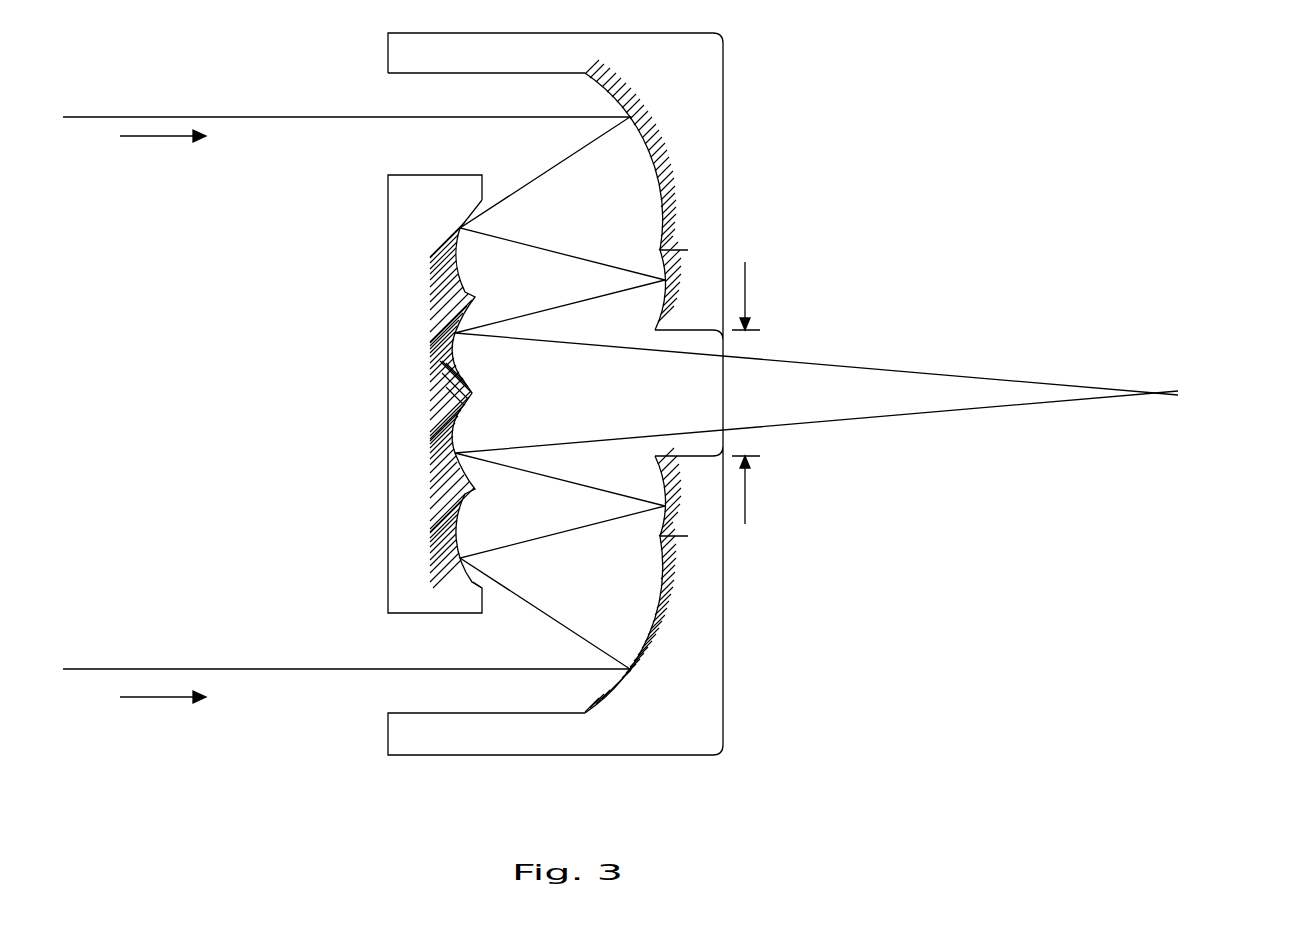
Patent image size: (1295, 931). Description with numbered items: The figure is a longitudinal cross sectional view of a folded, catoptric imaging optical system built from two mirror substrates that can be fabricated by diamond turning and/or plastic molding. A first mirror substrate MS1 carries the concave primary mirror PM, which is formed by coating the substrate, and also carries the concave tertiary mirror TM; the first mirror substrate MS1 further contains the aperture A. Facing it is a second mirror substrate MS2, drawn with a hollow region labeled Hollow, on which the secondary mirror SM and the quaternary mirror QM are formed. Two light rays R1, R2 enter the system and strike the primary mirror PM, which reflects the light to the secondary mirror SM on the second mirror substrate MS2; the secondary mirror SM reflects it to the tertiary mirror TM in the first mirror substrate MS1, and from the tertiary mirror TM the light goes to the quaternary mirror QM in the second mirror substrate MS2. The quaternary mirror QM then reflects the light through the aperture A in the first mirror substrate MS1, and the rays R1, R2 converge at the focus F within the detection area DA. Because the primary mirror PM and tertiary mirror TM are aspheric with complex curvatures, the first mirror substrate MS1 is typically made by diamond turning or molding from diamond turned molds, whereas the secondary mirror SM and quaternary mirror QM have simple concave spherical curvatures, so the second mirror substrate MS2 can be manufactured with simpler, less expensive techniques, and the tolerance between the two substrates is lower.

The first mirror substrate MS1 is at (555, 414).
The second mirror substrate MS2 is at (388, 318).
The primary mirror PM is at (660, 183).
The secondary mirror SM is at (463, 267).
The tertiary mirror TM is at (654, 313).
The quaternary mirror QM is at (463, 375).
The hollow in second mirror substrate Hollow is at (403, 470).
The first light ray R1 is at (620, 238).
The second light ray R2 is at (620, 547).
The aperture A is at (755, 302).
The focal point F is at (1154, 379).
The detection area DA is at (1189, 355).